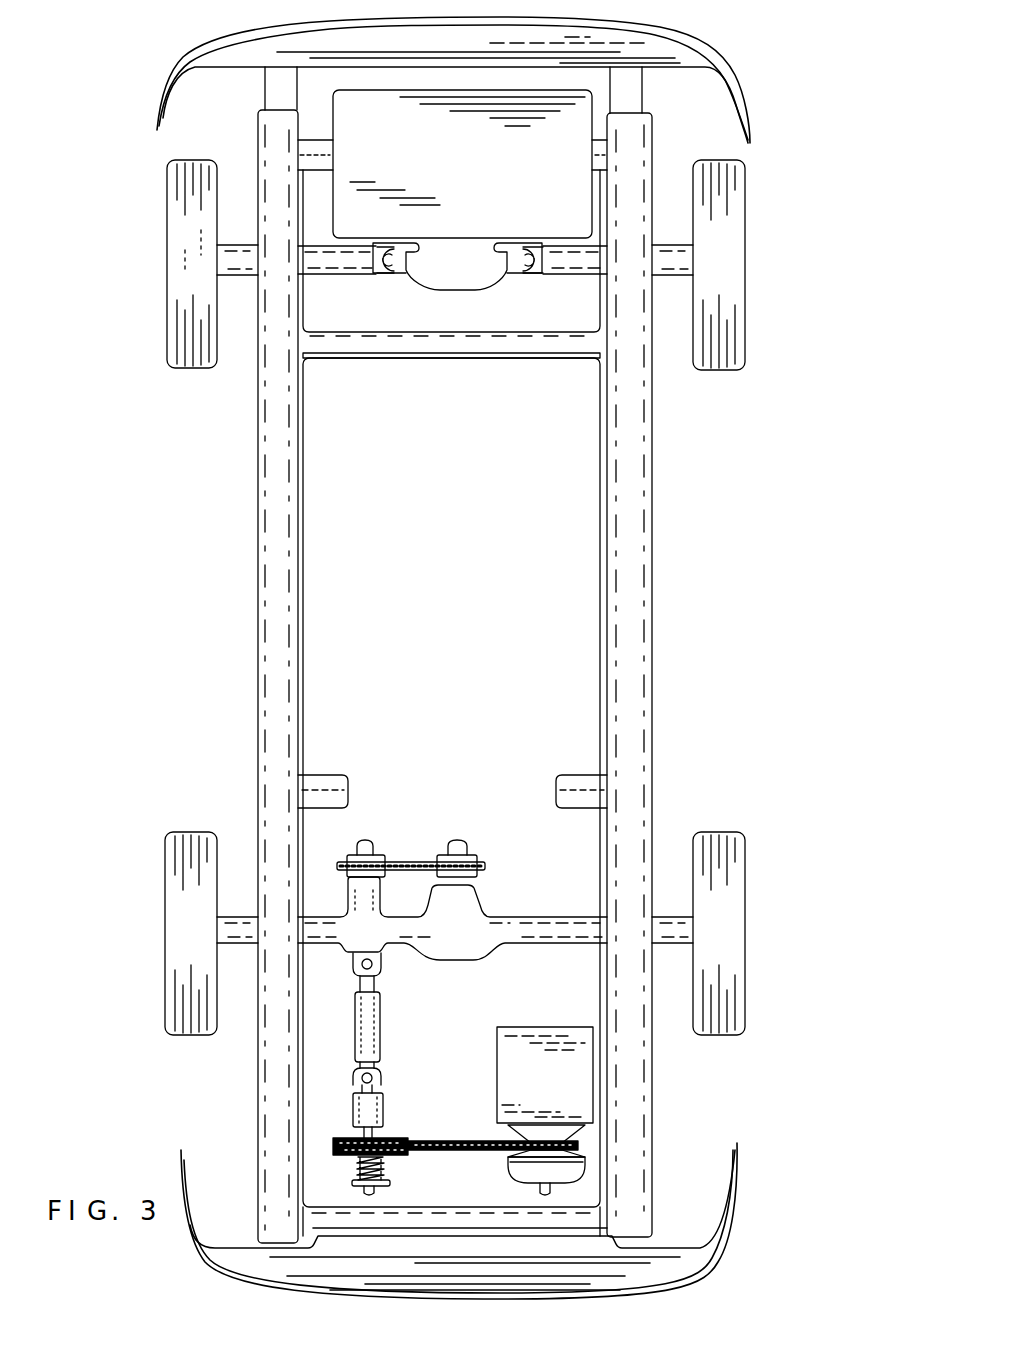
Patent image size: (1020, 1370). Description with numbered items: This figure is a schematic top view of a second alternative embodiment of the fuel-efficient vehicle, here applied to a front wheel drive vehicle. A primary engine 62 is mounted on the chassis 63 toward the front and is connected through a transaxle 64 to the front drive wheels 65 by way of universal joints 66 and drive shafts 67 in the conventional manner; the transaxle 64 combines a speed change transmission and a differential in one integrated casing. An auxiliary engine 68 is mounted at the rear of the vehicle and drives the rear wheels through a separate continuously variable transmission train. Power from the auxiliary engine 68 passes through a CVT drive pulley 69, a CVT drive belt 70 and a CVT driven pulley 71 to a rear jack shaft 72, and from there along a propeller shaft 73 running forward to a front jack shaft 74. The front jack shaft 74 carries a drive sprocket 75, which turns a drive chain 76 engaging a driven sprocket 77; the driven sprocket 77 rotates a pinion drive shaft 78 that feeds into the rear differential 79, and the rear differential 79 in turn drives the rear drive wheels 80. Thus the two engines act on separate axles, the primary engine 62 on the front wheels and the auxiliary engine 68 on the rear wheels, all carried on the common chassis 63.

The primary engine 62 is at (446, 184).
The chassis 63 is at (652, 577).
The transaxle 64 is at (439, 274).
The front drive wheels 65 is at (172, 202).
The universal joints 66 is at (386, 273).
The drive shafts 67 is at (326, 270).
The auxiliary engine 68 is at (529, 1093).
The CVT drive pulley 69 is at (583, 1164).
The CVT drive belt 70 is at (448, 1153).
The CVT driven pulley 71 is at (396, 1136).
The rear jack shaft 72 is at (368, 1188).
The propeller shaft 73 is at (382, 1028).
The front jack shaft 74 is at (363, 840).
The drive sprocket 75 is at (387, 858).
The drive chain 76 is at (396, 872).
The driven sprocket 77 is at (479, 858).
The pinion drive shaft 78 is at (459, 840).
The rear differential 79 is at (439, 949).
The drive wheels 80 is at (168, 915).